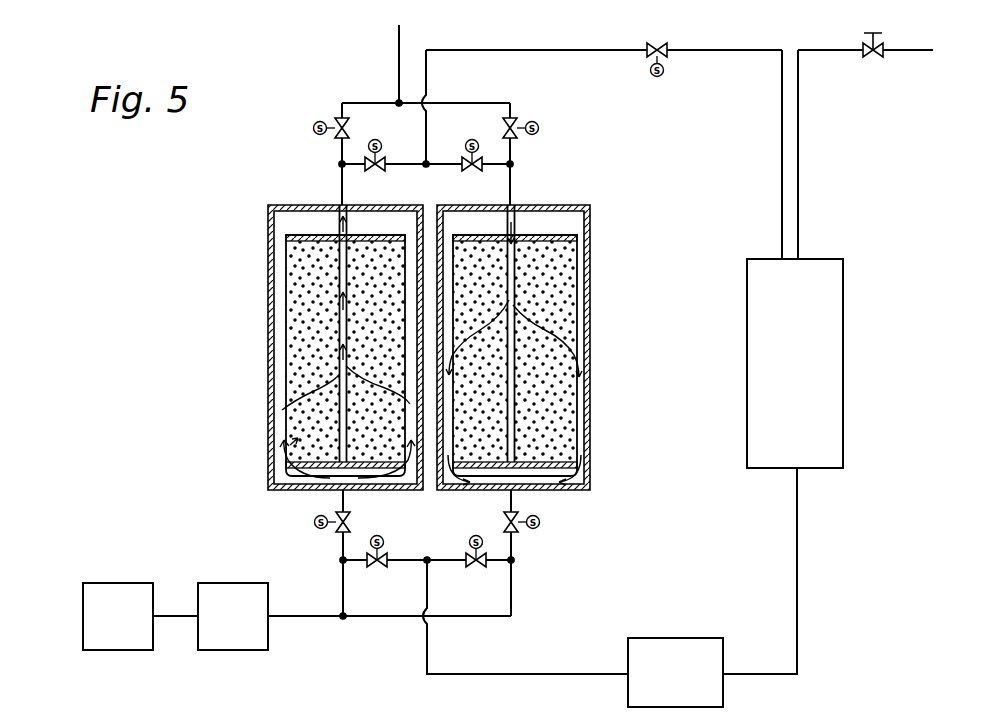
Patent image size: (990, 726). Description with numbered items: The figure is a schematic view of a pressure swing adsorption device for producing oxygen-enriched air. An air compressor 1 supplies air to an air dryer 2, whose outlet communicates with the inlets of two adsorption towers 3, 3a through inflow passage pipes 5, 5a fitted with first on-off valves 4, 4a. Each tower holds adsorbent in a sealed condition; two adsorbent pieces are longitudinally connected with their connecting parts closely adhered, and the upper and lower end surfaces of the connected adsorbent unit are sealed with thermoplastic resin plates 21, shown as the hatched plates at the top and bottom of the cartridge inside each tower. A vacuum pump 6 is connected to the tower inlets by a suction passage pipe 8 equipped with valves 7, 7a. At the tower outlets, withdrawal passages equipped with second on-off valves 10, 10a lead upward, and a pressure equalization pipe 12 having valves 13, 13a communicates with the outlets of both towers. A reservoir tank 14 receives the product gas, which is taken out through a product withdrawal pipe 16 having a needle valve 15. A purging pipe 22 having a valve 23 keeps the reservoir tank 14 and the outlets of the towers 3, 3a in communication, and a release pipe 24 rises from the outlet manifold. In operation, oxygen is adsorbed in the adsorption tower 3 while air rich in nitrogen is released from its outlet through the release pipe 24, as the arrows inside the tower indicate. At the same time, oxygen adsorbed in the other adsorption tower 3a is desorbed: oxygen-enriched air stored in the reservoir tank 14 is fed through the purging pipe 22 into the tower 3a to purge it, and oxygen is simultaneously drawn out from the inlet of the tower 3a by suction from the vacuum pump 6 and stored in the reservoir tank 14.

The air compressor 1 is at (116, 583).
The air dryer 2 is at (224, 583).
The adsorption tower 3 is at (270, 356).
The adsorption tower 3a is at (592, 336).
The first on-off valve 4 is at (352, 520).
The first on-off valve 4a is at (519, 528).
The inflow passage pipe 5 is at (343, 588).
The inflow passage pipe 5a is at (512, 588).
The vacuum pump 6 is at (686, 644).
The valve 7 is at (377, 568).
The valve 7a is at (476, 567).
The suction passage pipe 8 is at (502, 674).
The second on-off valve 10 is at (341, 122).
The second on-off valve 10a is at (515, 126).
The pressure equalization pipe 12 is at (405, 162).
The valve 13 is at (376, 172).
The valve 13a is at (458, 170).
The reservoir tank 14 is at (843, 346).
The needle valve 15 is at (877, 57).
The product withdrawal pipe 16 is at (798, 170).
The thermoplastic resin plate 21 is at (310, 232).
The purging pipe 22 is at (720, 52).
The valve 23 is at (660, 45).
The release pipe 24 is at (399, 62).